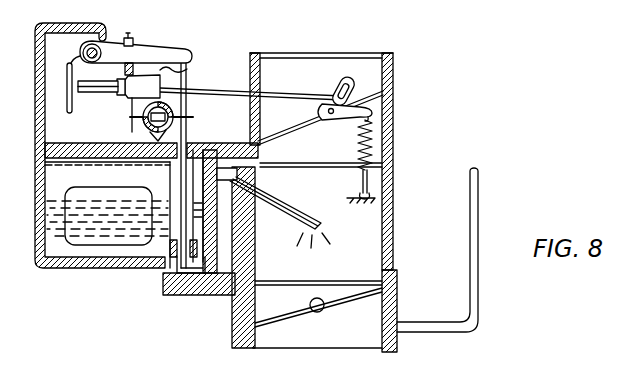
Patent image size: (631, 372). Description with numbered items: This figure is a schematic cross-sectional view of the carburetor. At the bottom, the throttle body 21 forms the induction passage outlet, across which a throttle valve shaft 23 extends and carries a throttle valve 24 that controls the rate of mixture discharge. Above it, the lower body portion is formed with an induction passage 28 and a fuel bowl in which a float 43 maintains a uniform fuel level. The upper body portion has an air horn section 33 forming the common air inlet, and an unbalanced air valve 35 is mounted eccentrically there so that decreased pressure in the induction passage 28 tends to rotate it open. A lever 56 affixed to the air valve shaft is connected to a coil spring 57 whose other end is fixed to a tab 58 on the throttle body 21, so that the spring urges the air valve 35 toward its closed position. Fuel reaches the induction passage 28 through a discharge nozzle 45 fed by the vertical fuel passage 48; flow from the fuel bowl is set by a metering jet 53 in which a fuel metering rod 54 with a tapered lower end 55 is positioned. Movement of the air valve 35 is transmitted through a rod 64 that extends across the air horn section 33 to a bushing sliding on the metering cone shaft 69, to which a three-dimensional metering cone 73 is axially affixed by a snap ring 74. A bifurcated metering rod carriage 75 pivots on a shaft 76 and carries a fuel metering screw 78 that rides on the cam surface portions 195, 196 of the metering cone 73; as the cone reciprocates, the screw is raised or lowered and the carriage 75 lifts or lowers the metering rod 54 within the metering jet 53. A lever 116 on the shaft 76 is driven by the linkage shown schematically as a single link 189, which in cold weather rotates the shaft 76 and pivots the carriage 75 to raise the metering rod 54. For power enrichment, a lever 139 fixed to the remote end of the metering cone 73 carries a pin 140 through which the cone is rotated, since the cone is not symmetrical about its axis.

The throttle body 21 is at (397, 338).
The throttle valve shaft 23 is at (313, 299).
The throttle valve 24 is at (285, 311).
The induction passage 28 is at (381, 208).
The air horn section 33 is at (386, 64).
The unbalanced air valve 35 is at (292, 125).
The float 43 is at (80, 190).
The discharge nozzle 45 is at (317, 224).
The vertical fuel passage 48 is at (236, 232).
The metering jet 53 is at (172, 262).
The fuel metering rod 54 is at (180, 178).
The tapered lower end 55 is at (183, 200).
The lever 56 is at (328, 118).
The coil spring 57 is at (356, 142).
The tab 58 is at (358, 193).
The rod 64 is at (228, 94).
The metering cone shaft 69 is at (84, 92).
The metering cone 73 is at (146, 78).
The snap ring 74 is at (120, 80).
The metering rod carriage 75 is at (186, 50).
The shaft 76 is at (101, 53).
The fuel metering screw 78 is at (133, 41).
The lever 116 is at (76, 54).
The lever 139 is at (130, 116).
The pin 140 is at (152, 127).
The link 189 is at (70, 113).
The cam surface portion 195 is at (188, 70).
The cam surface portion 196 is at (128, 77).